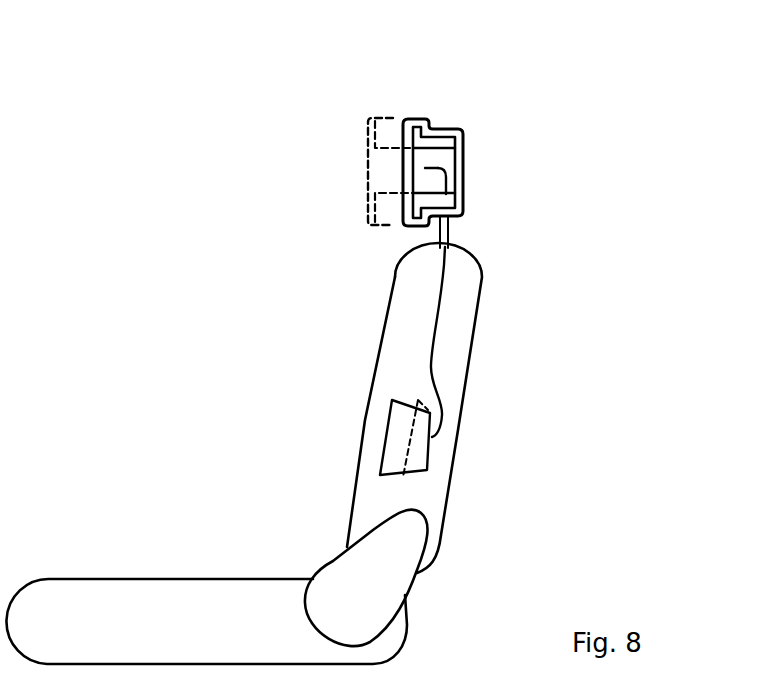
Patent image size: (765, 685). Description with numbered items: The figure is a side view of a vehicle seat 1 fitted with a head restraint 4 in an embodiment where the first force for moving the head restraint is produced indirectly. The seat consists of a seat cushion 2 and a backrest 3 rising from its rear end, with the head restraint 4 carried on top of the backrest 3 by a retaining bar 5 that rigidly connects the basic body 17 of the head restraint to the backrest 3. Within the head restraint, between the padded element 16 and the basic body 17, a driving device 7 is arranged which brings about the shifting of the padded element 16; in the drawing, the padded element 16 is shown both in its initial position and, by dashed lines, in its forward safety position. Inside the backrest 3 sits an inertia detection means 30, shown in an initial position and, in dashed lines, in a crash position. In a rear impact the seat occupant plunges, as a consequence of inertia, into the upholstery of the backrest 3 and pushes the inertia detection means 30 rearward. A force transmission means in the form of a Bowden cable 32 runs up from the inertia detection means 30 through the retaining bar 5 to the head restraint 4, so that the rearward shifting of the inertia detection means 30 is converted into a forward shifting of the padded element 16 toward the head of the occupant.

The vehicle seat 1 is at (515, 437).
The seat cushion 2 is at (135, 610).
The backrest 3 is at (455, 322).
The head restraint 4 is at (323, 148).
The retaining bar 5 is at (452, 232).
The driving device 7 is at (438, 168).
The padded element 16 is at (423, 117).
The basic body 17 is at (465, 190).
The inertia detection means 30 is at (405, 450).
The Bowden cable 32 is at (433, 328).